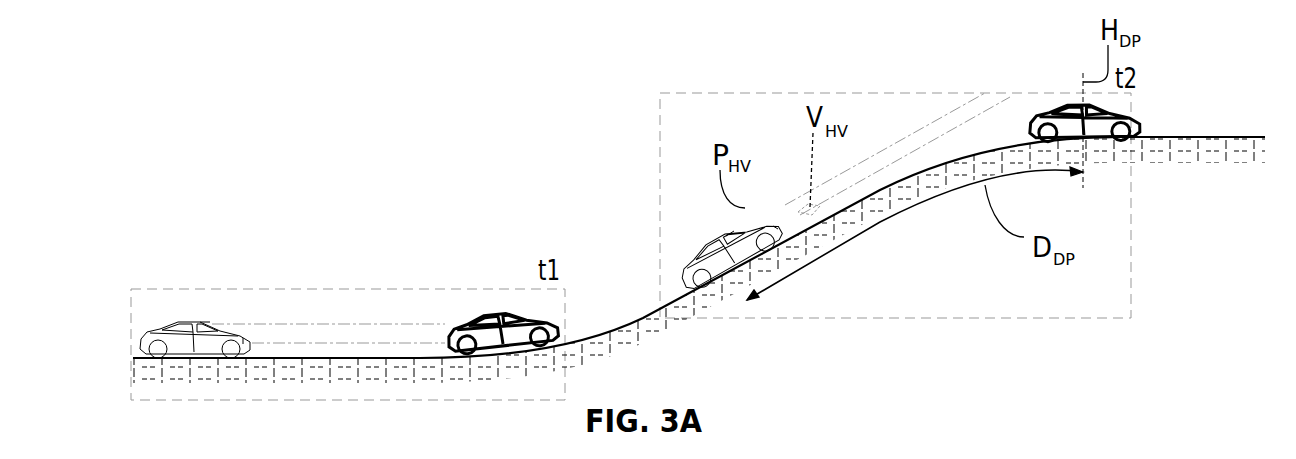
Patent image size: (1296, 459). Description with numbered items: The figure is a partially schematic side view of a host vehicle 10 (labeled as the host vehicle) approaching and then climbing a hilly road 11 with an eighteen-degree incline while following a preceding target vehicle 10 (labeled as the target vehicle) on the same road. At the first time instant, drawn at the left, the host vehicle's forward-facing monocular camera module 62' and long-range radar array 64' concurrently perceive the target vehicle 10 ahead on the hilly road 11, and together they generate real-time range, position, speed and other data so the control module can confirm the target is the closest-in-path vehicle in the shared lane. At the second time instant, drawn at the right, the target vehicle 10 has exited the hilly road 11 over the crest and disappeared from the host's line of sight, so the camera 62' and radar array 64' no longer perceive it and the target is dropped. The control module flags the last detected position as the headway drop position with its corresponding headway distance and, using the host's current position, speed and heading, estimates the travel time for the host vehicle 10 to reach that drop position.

The vehicle 10 is at (1053, 108).
The hilly road 11 is at (642, 317).
The camera module 62' is at (460, 236).
The radar array 64' is at (511, 236).